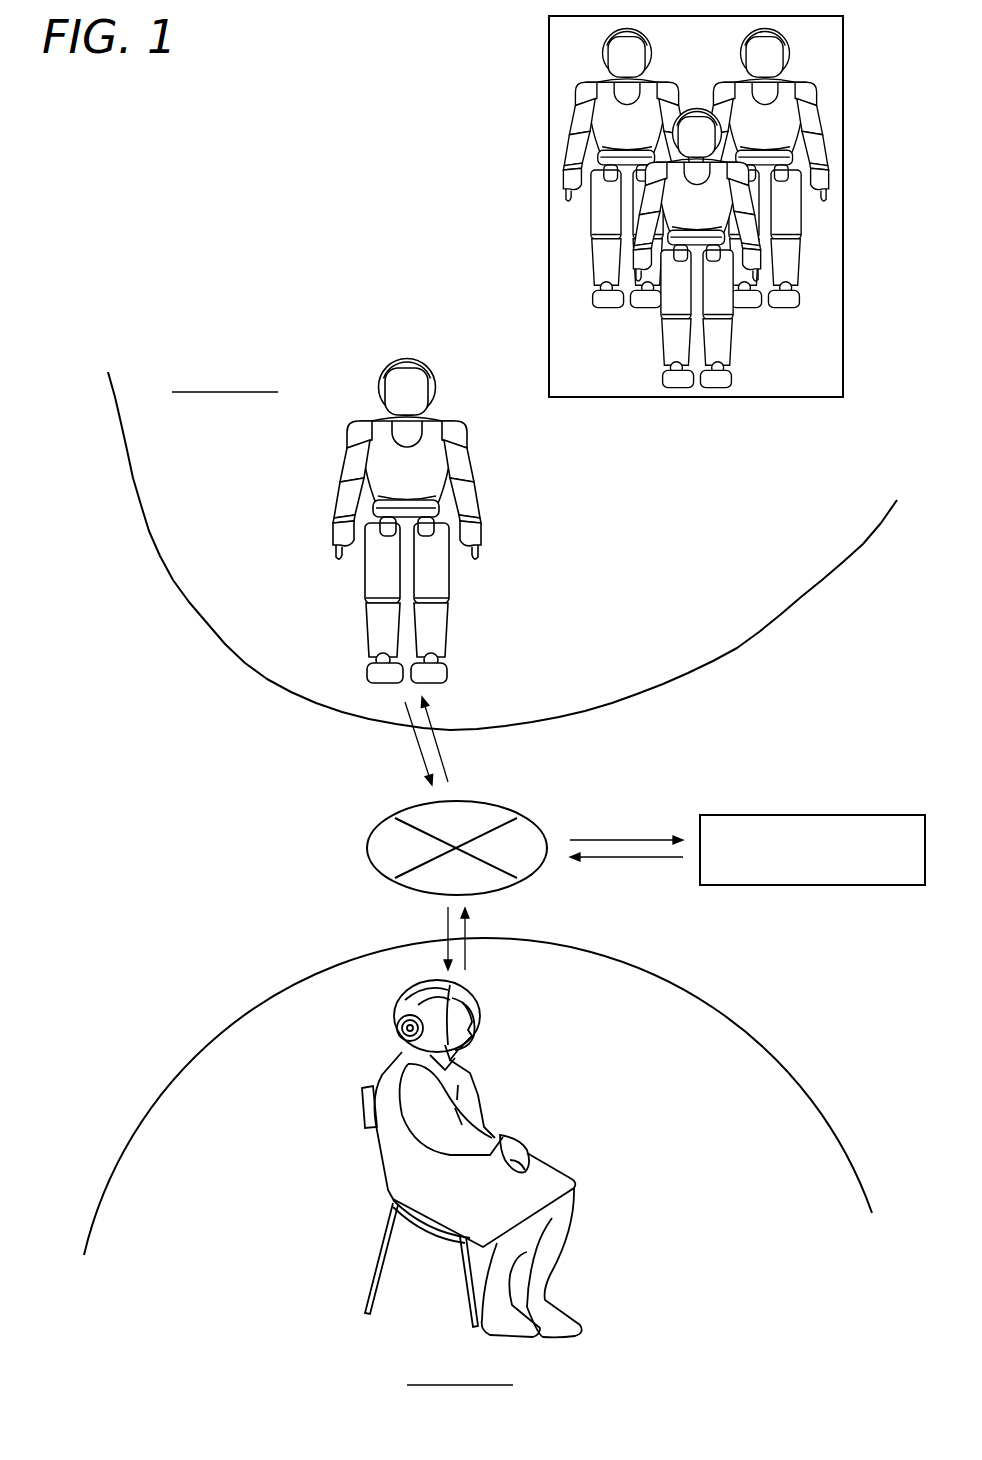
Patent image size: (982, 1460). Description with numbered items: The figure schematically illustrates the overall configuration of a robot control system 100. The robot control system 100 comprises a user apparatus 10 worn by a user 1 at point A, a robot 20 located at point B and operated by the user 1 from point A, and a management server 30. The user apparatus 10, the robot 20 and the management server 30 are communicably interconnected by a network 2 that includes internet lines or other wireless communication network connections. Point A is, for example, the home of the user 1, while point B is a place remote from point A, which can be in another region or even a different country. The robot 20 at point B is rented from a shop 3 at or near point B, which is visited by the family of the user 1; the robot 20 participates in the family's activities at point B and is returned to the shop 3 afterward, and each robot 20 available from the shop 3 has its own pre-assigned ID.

The robot control system 100 is at (212, 790).
The user 1 is at (371, 1080).
The user apparatus 10 is at (482, 1037).
The network 2 is at (373, 830).
The management server 30 is at (887, 815).
The robot 20 is at (817, 107).
The shop 3 is at (847, 250).